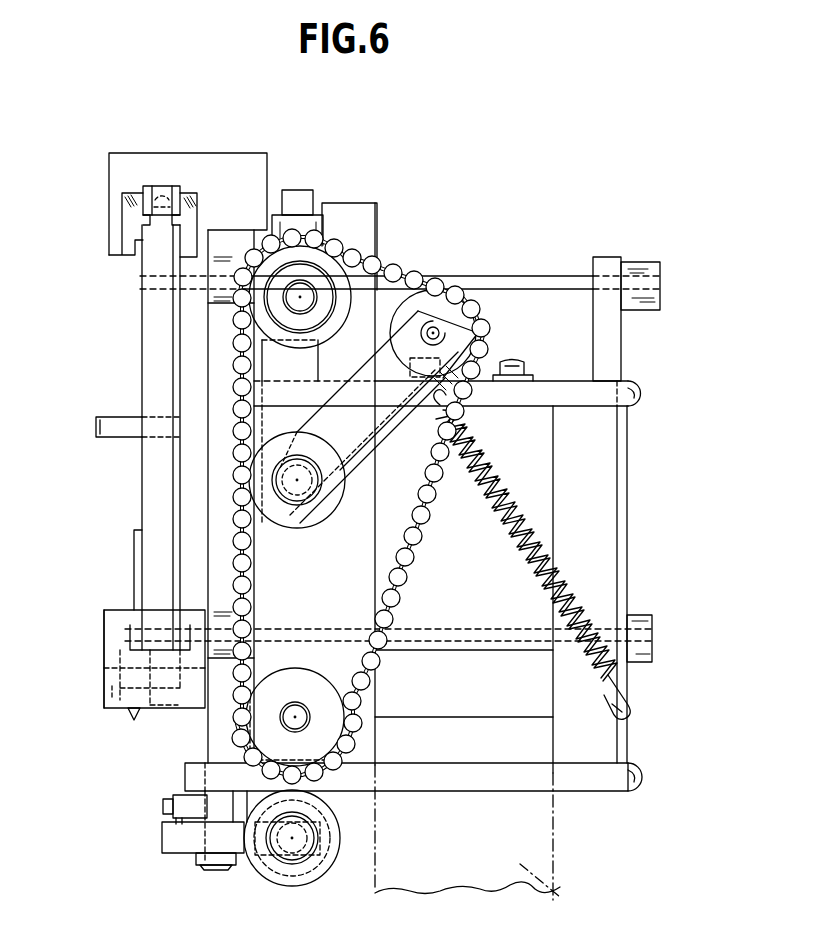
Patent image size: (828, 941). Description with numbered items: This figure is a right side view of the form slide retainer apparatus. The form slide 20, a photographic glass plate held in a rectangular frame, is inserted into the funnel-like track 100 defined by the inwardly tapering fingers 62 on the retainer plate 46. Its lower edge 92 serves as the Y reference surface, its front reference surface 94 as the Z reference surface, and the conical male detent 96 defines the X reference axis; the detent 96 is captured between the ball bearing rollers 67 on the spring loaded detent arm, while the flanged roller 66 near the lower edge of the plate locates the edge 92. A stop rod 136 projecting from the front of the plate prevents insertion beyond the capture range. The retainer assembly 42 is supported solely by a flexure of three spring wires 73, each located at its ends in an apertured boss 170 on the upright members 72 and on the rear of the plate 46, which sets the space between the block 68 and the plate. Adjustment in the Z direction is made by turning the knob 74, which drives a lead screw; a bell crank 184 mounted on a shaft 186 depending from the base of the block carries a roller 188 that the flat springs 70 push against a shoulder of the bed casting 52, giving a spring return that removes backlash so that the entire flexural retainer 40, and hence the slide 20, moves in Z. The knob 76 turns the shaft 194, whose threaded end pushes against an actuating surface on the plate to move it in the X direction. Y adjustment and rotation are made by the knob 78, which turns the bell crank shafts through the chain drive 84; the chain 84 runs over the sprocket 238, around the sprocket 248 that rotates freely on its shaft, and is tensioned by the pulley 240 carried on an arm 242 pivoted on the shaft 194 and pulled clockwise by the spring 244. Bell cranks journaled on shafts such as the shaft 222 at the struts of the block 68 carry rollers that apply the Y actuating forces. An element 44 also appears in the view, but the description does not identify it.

The form slide 20 is at (163, 310).
The flexural retainer 40 is at (384, 150).
The retainer assembly 42 is at (278, 155).
The frame 44 is at (486, 258).
The retainer plate 46 is at (190, 712).
The bed casting 52 is at (561, 895).
The fingers 62 is at (110, 218).
The flanged bearing roller 66 is at (120, 690).
The rollers 67 is at (155, 188).
The block 68 is at (378, 262).
The flat springs 70 is at (628, 439).
The upright members 72 is at (608, 257).
The spring wires 73 is at (514, 276).
The knob 74 is at (310, 870).
The knob 76 is at (320, 510).
The knob 78 is at (356, 249).
The chain drive 84 is at (420, 531).
The edge 92 is at (136, 639).
The front reference surface 94 is at (142, 503).
The conical male detent 96 is at (162, 192).
The funnel-like track 100 is at (130, 241).
The stop rod 136 is at (120, 425).
The apertured boss 170 is at (635, 262).
The bell crank 184 is at (170, 847).
The shaft 186 is at (210, 868).
The roller 188 is at (173, 806).
The shaft 194 is at (301, 464).
The shaft 222 is at (307, 210).
The sprocket 238 is at (302, 690).
The pulley 240 is at (476, 300).
The arm 242 is at (362, 453).
The spring 244 is at (462, 464).
The sprocket 248 is at (363, 248).